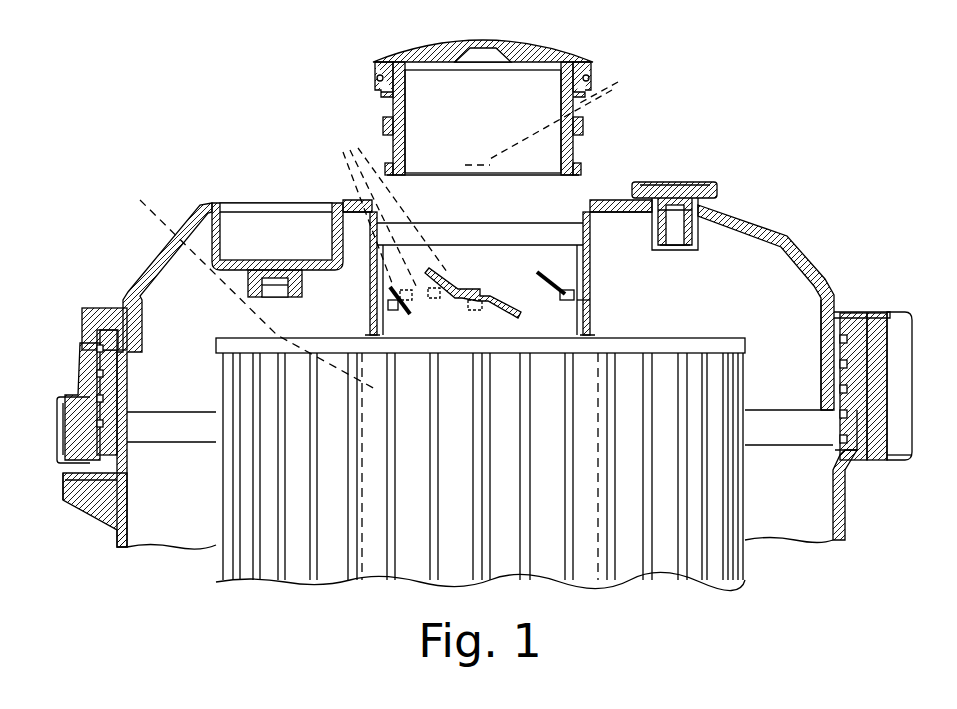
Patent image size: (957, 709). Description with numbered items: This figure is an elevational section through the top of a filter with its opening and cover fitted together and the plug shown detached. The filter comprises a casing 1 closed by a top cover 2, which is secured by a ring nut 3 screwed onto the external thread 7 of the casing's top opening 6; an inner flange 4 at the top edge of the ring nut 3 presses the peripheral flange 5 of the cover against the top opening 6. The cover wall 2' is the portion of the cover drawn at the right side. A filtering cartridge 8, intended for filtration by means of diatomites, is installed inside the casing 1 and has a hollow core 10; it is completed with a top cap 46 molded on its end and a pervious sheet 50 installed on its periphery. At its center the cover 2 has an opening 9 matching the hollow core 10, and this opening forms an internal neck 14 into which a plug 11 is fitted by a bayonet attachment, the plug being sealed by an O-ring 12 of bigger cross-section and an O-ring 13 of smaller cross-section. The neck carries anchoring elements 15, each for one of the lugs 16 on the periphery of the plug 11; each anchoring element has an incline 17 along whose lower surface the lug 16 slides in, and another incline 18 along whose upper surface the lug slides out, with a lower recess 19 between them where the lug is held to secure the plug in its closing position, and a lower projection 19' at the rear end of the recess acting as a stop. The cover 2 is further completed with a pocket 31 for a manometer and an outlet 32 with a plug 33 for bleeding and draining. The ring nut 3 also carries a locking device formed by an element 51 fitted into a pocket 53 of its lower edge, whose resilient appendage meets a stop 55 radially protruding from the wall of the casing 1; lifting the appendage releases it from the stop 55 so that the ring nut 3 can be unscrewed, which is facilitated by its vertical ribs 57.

The casing 1 is at (800, 507).
The top cover 2 is at (778, 281).
The cover wall flange 2' is at (855, 450).
The ring nut 3 is at (895, 345).
The inner flange 4 is at (853, 350).
The peripheral flange 5 is at (875, 345).
The top opening 6 is at (105, 330).
The external thread 7 is at (78, 410).
The filtering cartridge 8 is at (658, 398).
The opening 9 is at (480, 290).
The hollow core 10 is at (380, 362).
The plug 11 is at (540, 63).
The O-ring 12 is at (588, 72).
The O-ring 13 is at (383, 122).
The internal neck 14 is at (590, 272).
The anchoring elements 15 is at (575, 190).
The lugs 16 is at (480, 174).
The incline 17 is at (375, 320).
The incline 18 is at (582, 292).
The lower recess 19 is at (423, 445).
The lower projection 19' is at (640, 314).
The pocket 31 is at (230, 235).
The outlet 32 is at (700, 222).
The plug 33 is at (680, 190).
The top cap 46 is at (232, 345).
The pervious sheet 50 is at (303, 555).
The element 51 is at (65, 470).
The pocket 53 is at (57, 397).
The stop 55 is at (100, 492).
The vertical ribs 57 is at (900, 450).